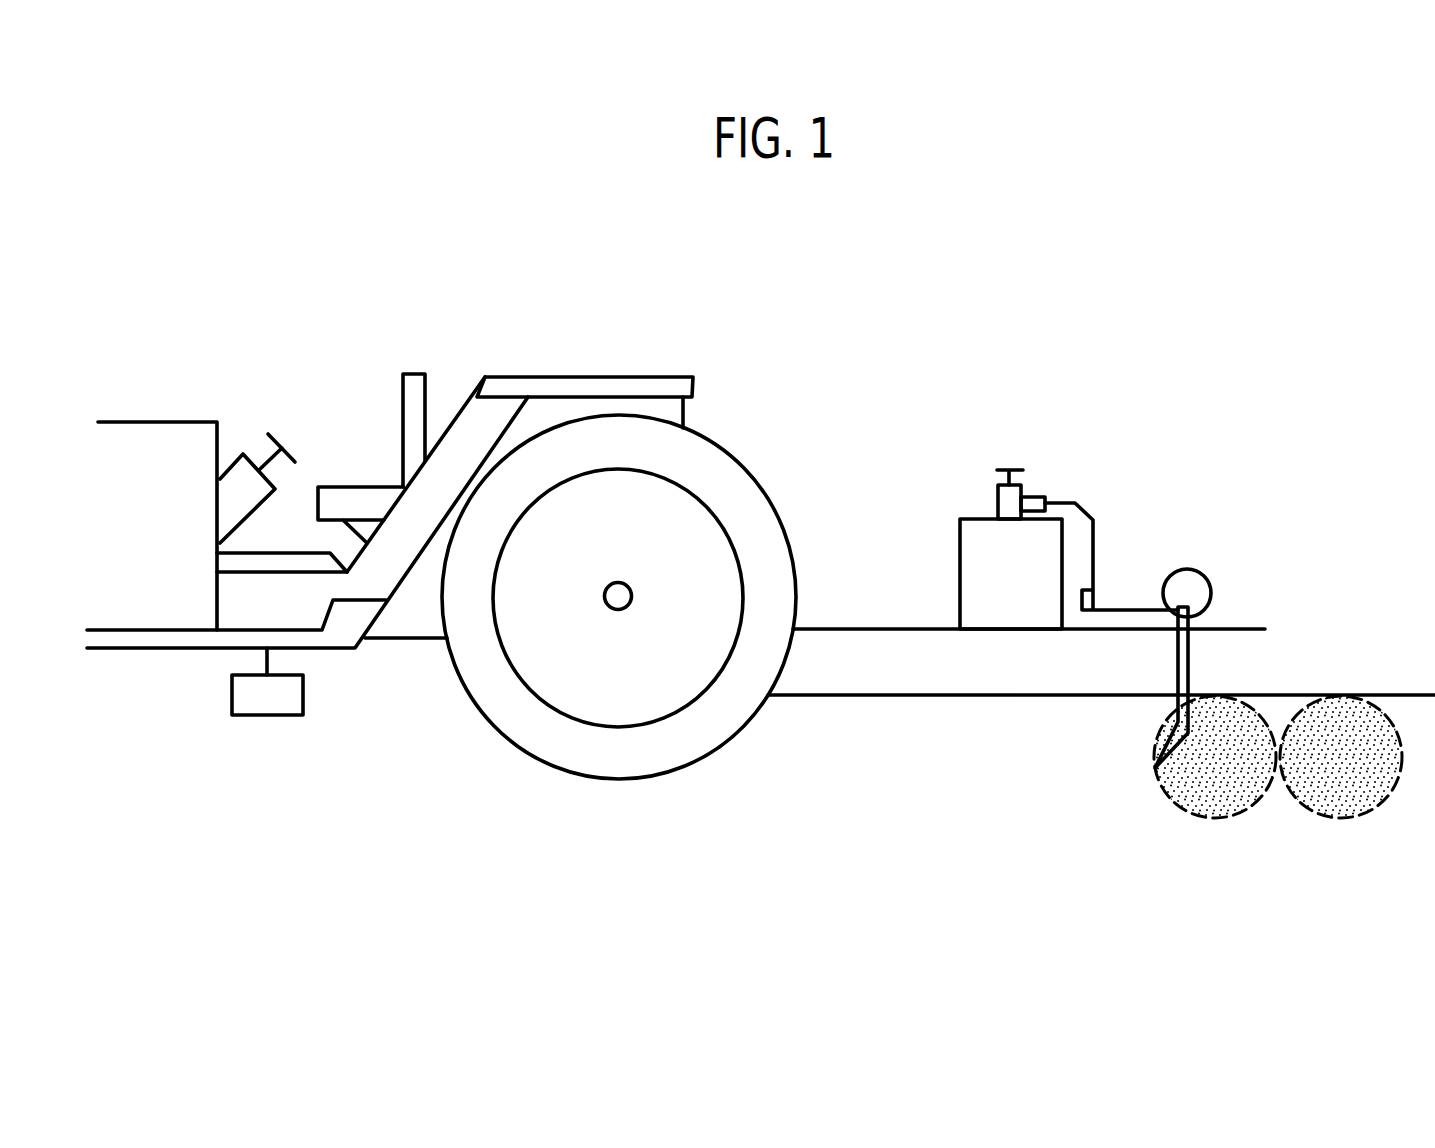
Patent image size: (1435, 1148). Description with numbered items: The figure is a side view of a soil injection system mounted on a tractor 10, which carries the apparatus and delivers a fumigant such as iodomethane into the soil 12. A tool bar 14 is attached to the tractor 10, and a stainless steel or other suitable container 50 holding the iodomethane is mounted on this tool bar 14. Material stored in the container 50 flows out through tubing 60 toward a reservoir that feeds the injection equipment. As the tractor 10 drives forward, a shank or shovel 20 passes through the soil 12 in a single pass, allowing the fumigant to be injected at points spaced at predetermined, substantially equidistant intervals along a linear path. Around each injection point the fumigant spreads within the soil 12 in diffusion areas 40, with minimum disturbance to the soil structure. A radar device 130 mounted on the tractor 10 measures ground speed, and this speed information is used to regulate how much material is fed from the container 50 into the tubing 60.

The tractor 10 is at (545, 318).
The soil 12 is at (1002, 757).
The tool bar 14 is at (845, 628).
The shank or shovel 20 is at (1188, 655).
The diffusion areas 40 is at (1207, 817).
The container 50 is at (960, 537).
The tubing 60 is at (1060, 503).
The radar device 130 is at (263, 715).